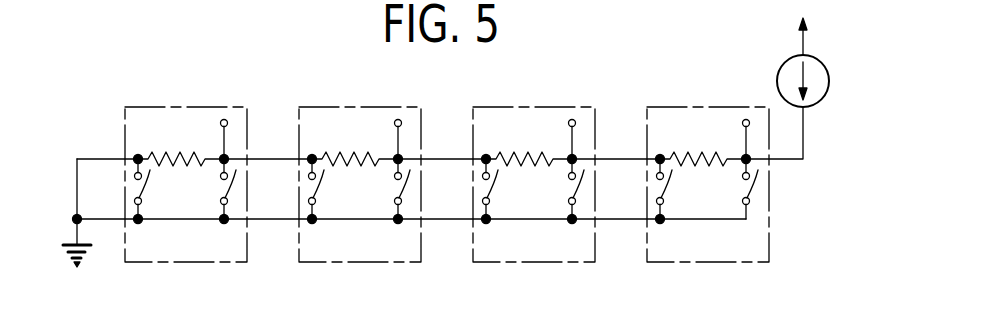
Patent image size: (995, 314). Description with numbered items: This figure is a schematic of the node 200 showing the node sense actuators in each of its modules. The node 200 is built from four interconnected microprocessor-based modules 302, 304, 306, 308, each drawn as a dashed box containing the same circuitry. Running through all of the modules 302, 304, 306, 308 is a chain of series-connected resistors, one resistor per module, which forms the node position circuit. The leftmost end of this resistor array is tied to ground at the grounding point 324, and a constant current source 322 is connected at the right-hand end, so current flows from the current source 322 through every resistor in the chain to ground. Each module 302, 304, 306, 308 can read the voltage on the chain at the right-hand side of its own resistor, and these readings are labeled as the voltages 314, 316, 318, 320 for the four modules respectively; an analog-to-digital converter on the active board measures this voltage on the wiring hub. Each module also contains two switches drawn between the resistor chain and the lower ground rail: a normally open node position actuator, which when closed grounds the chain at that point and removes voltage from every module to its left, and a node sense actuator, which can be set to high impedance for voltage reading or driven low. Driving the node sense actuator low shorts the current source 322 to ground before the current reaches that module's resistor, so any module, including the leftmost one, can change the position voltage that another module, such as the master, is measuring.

The node 200 is at (180, 52).
The module 302 is at (128, 262).
The module 304 is at (302, 262).
The module 306 is at (476, 262).
The module 308 is at (650, 262).
The voltage V1 314 is at (224, 119).
The voltage V2 316 is at (398, 119).
The voltage V3 318 is at (572, 119).
The voltage V4 320 is at (746, 119).
The current source 322 is at (830, 70).
The grounding point 324 is at (69, 250).